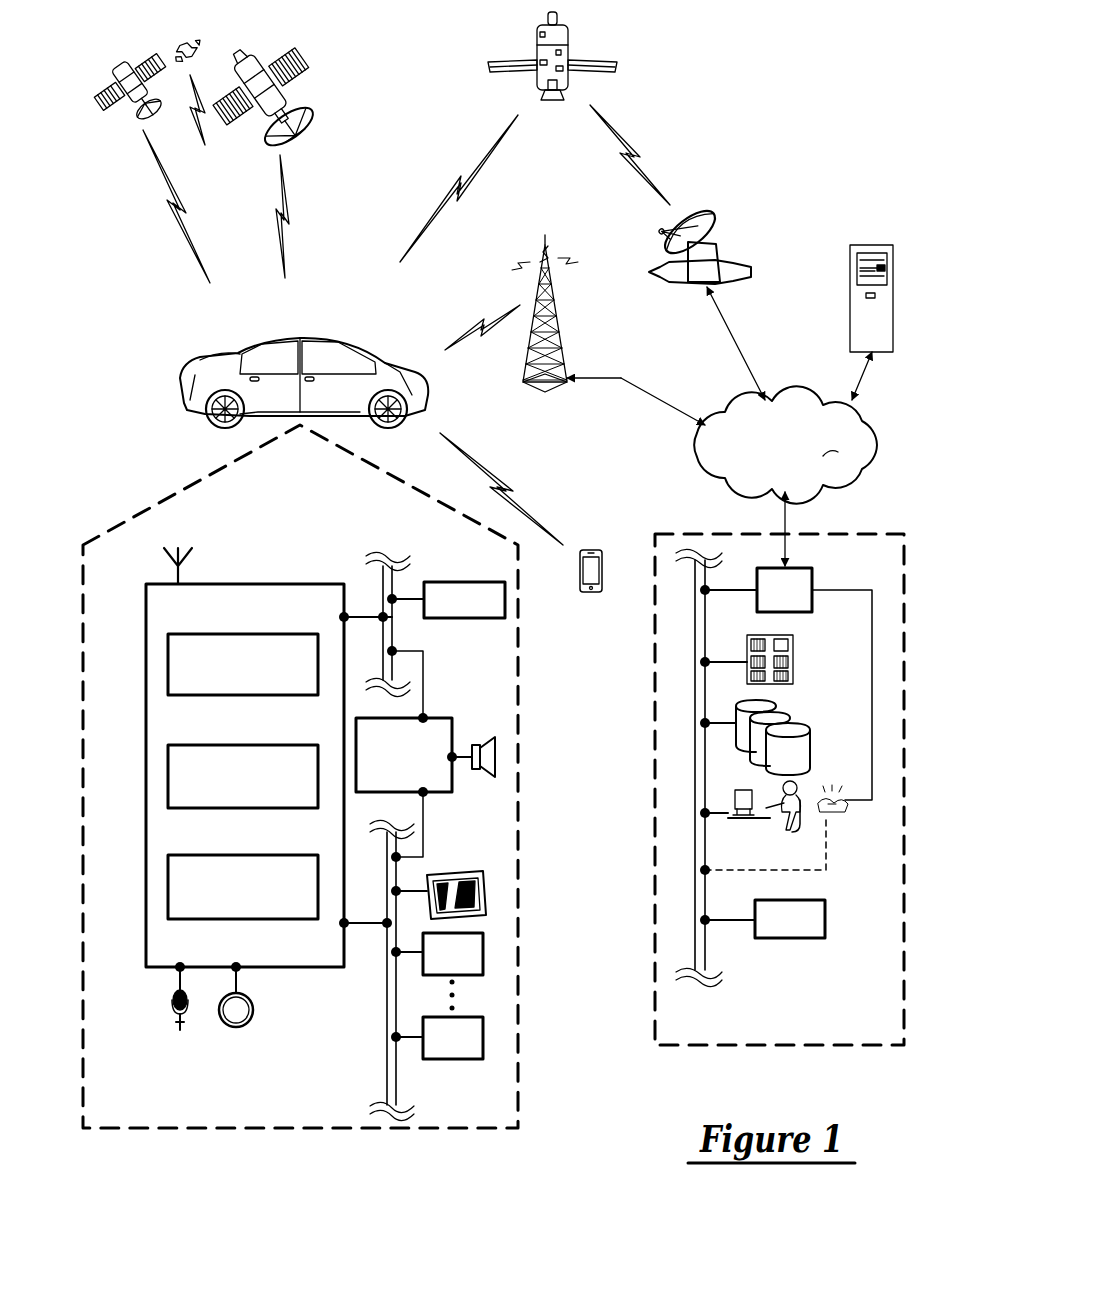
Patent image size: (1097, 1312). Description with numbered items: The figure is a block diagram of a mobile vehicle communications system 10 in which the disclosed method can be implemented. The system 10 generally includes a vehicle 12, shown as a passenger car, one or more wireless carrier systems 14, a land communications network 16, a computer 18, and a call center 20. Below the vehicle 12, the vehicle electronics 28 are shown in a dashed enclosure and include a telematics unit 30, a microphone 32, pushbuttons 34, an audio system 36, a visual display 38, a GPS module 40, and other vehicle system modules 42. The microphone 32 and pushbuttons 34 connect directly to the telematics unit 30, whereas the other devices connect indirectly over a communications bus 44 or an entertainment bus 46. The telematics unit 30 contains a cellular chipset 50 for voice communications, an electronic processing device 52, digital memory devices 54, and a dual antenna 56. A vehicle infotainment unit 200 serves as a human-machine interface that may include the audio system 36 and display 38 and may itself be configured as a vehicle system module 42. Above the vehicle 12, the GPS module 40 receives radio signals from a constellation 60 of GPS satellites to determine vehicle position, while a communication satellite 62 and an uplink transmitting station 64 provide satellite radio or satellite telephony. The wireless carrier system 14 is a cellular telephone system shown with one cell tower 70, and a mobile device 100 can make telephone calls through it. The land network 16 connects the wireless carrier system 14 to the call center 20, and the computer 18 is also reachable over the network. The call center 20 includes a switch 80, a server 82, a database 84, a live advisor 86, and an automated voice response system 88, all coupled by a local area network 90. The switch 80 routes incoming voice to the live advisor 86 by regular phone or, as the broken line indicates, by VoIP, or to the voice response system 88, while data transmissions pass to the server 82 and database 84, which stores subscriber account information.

The mobile vehicle communications system 10 is at (795, 68).
The vehicle 12 is at (175, 402).
The wireless carrier system 14 is at (530, 398).
The land communications network 16 is at (785, 444).
The computer 18 is at (895, 313).
The call center 20 is at (768, 1047).
The vehicle electronics 28 is at (293, 1130).
The telematics unit 30 is at (298, 584).
The microphone 32 is at (168, 1004).
The pushbutton 34 is at (256, 1008).
The audio system 36 is at (425, 785).
The visual display 38 is at (450, 875).
The GPS module 40 is at (437, 954).
The vehicle system module 42 is at (437, 1038).
The communications bus 44 is at (385, 960).
The entertainment bus 46 is at (398, 582).
The cellular chipset 50 is at (243, 664).
The electronic processing device 52 is at (243, 776).
The digital memory device 54 is at (243, 887).
The dual antenna 56 is at (175, 568).
The constellation of GPS satellites 60 is at (332, 108).
The communication satellite 62 is at (568, 34).
The uplink transmitting station 64 is at (728, 260).
The cell tower 70 is at (560, 315).
The switch 80 is at (786, 684).
The server 82 is at (796, 660).
The database 84 is at (812, 732).
The live advisor 86 is at (768, 835).
The automated voice response system 88 is at (762, 919).
The local area network 90 is at (705, 962).
The mobile device 100 is at (603, 590).
The vehicle infotainment unit 200 is at (446, 600).